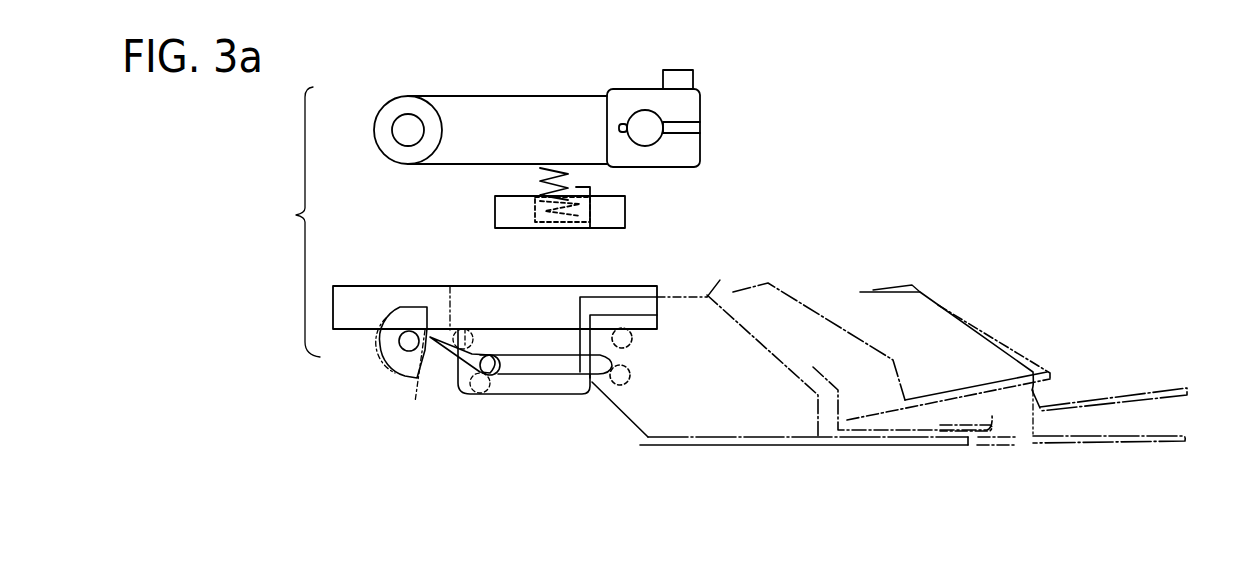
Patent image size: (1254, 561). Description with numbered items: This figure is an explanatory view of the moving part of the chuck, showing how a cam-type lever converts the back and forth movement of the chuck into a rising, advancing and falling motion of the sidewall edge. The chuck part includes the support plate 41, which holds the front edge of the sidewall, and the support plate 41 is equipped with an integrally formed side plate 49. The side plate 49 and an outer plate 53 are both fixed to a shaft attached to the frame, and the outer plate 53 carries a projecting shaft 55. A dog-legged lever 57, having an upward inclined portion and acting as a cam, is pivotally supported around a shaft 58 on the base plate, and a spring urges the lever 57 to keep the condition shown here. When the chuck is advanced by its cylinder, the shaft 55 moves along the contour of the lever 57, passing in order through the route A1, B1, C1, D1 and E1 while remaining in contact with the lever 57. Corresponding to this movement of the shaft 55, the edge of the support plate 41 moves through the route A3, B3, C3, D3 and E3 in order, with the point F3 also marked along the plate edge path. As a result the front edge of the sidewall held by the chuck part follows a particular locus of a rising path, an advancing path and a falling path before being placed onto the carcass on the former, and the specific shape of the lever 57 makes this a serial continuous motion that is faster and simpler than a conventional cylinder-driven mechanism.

The support plate 41 is at (858, 447).
The side plate 49 is at (708, 294).
The outer plate 53 is at (413, 380).
The shaft 55 is at (408, 369).
The lever 57 is at (547, 368).
The shaft 58 is at (503, 376).
The route point A1 is at (384, 350).
The route point B1 is at (481, 395).
The route point C1 is at (628, 383).
The route point D1 is at (630, 347).
The route point E1 is at (451, 288).
The route point A3 is at (965, 447).
The route point B3 is at (1050, 372).
The route point C3 is at (1188, 387).
The route point D3 is at (1185, 441).
The route point E3 is at (1012, 447).
The point F3 is at (980, 421).